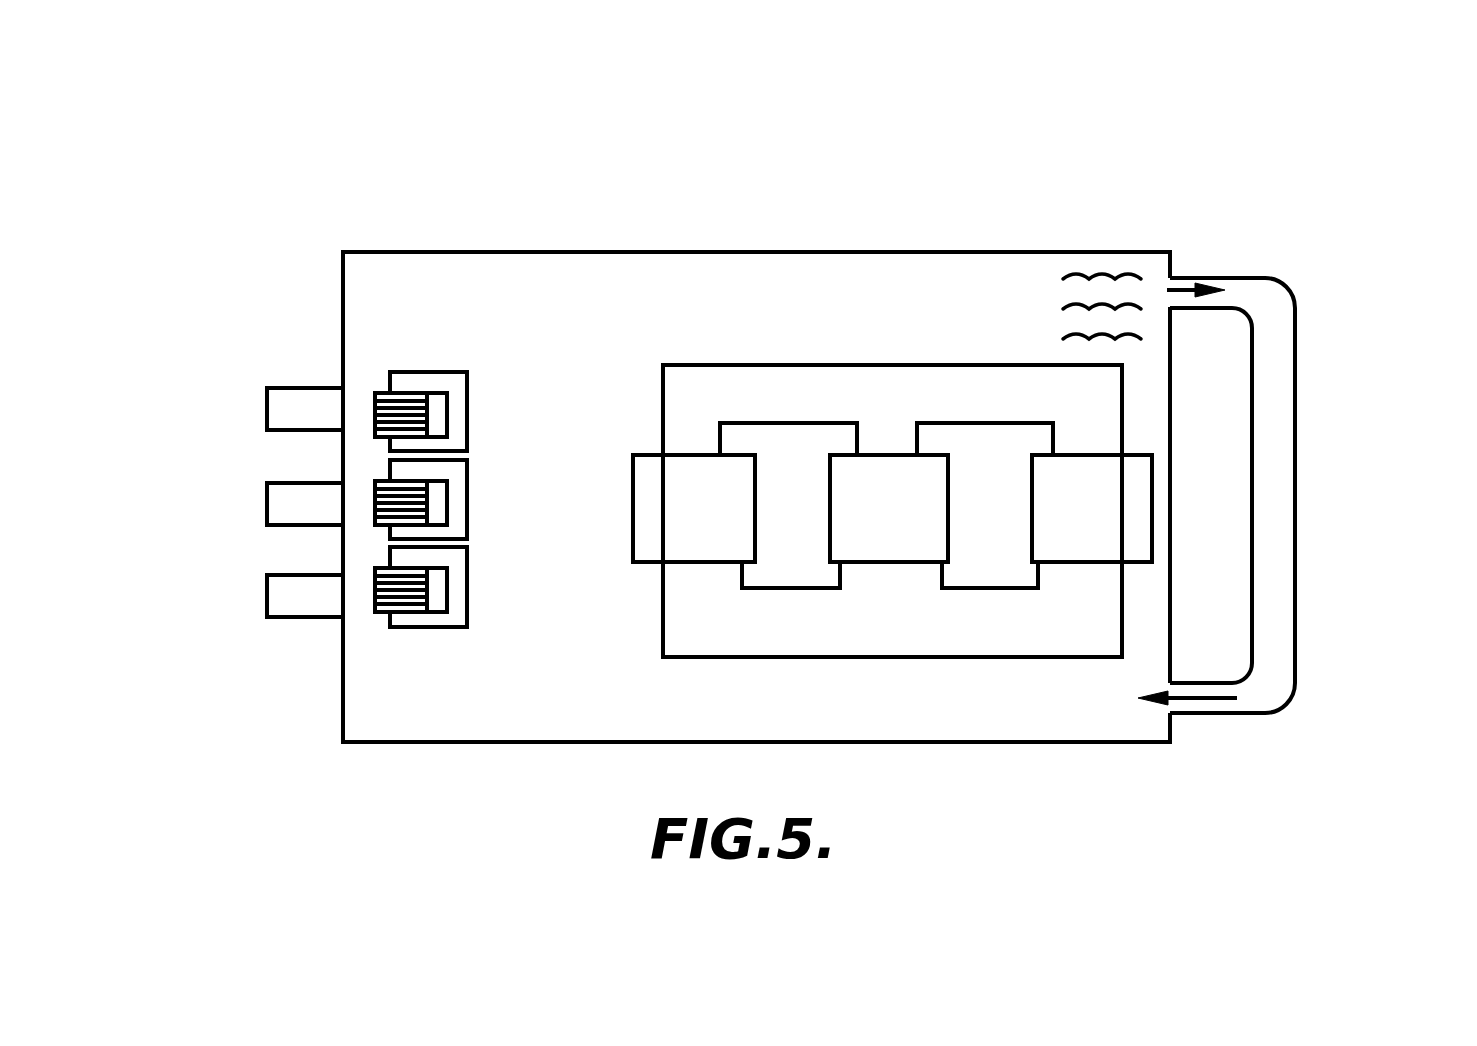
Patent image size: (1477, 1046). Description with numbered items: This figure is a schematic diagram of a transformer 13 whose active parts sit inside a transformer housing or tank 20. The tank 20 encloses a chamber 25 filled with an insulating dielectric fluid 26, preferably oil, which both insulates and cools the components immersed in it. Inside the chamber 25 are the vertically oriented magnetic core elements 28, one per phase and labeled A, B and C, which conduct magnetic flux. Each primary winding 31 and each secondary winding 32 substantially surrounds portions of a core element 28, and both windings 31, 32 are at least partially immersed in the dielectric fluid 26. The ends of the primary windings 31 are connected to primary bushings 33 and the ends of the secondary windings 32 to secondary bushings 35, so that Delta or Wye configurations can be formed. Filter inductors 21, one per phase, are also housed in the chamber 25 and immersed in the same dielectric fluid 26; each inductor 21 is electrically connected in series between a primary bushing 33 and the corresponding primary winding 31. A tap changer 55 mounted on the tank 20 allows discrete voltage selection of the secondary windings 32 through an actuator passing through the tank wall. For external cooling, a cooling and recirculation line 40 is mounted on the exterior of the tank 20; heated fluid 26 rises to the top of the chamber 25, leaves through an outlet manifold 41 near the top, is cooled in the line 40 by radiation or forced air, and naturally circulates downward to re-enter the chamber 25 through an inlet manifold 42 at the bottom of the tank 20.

The transformer 13 is at (867, 180).
The transformer tank 20 is at (382, 250).
The inductor 21 is at (422, 373).
The chamber 25 is at (360, 357).
The dielectric fluid 26 is at (1153, 265).
The magnetic core element 28 is at (1082, 418).
The primary winding 31 is at (1202, 468).
The secondary winding 32 is at (1204, 551).
The primary bushing 33 is at (267, 405).
The secondary bushing 35 is at (265, 510).
The cooling and recirculation line 40 is at (1290, 380).
The outlet manifold 41 is at (1293, 298).
The inlet manifold 42 is at (1263, 697).
The tap changer 55 is at (265, 613).